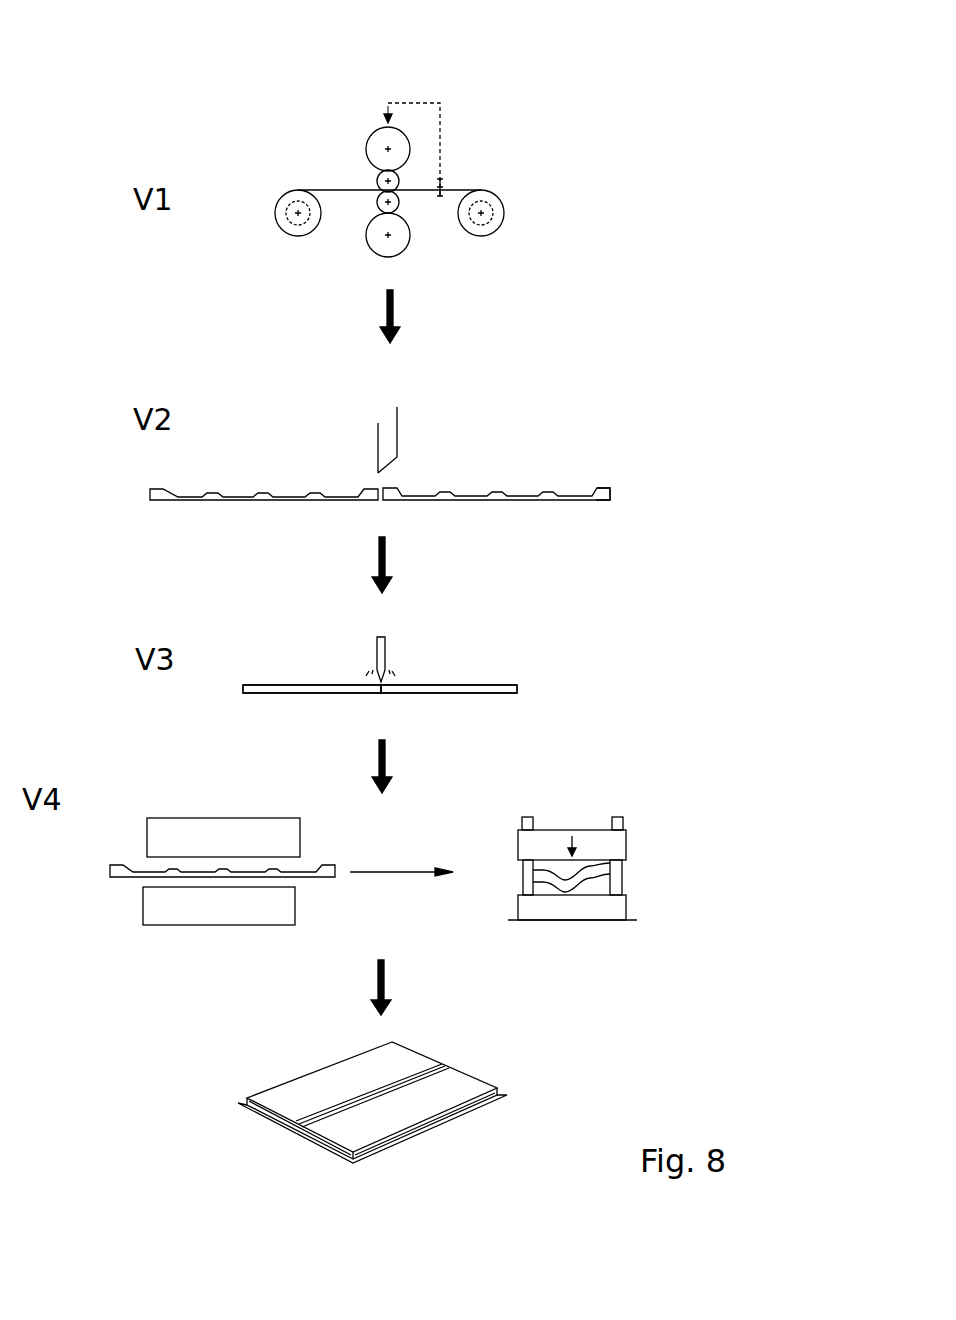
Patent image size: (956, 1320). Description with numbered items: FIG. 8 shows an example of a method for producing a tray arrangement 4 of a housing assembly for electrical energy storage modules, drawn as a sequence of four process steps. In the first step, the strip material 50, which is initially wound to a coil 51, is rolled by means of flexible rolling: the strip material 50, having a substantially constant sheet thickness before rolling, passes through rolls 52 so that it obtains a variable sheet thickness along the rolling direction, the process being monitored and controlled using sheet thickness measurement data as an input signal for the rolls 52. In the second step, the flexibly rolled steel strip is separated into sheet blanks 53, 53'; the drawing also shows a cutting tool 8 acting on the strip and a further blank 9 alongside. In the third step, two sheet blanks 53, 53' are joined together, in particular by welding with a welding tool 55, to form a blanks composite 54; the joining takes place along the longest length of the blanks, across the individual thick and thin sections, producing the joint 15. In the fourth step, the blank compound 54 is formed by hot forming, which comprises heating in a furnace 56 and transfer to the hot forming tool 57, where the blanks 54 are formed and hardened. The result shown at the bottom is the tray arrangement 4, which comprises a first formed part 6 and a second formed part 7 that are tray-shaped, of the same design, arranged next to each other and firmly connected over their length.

The strip material 50 is at (332, 188).
The coil 51 is at (283, 200).
The rolls 52 is at (360, 123).
The sheet blank 53 is at (495, 561).
The sheet blank 53' is at (265, 564).
The cutting tool 8 is at (390, 490).
The strip blank 9 is at (603, 490).
The welding tool 55 is at (368, 640).
The blanks composite 54 is at (425, 682).
The weld seam 15 is at (385, 700).
The furnace 56 is at (178, 818).
The hot forming tool 57 is at (593, 818).
The tray arrangement 4 is at (367, 1094).
The first formed part 6 is at (320, 1083).
The second formed part 7 is at (457, 1085).